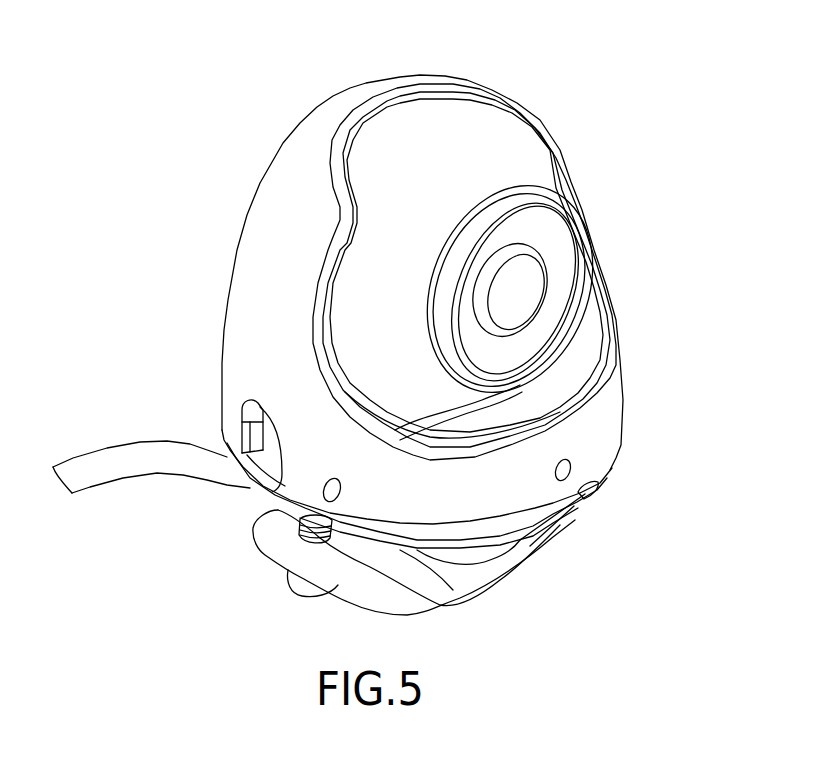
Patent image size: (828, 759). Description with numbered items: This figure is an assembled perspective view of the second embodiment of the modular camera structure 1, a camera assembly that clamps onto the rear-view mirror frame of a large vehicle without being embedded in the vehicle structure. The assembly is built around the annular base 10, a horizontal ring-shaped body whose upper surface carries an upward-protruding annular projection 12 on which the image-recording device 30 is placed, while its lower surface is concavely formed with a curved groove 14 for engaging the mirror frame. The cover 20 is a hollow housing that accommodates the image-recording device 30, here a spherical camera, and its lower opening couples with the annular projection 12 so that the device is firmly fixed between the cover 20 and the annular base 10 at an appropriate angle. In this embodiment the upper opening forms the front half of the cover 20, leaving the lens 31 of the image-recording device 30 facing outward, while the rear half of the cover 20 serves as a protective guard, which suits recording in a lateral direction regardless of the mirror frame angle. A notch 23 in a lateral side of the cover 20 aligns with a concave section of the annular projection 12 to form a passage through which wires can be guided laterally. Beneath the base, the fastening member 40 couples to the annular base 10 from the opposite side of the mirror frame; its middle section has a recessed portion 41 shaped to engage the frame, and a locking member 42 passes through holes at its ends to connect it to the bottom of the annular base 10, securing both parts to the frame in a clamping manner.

The modular camera structure 1 is at (160, 67).
The annular base 10 is at (612, 468).
The annular projection 12 is at (578, 358).
The curved groove 14 is at (587, 498).
The cover 20 is at (257, 267).
The notch 23 is at (268, 458).
The image-recording device 30 is at (455, 118).
The lens 31 is at (522, 272).
The fastening member 40 is at (440, 603).
The recessed portion 41 is at (477, 562).
The locking member 42 is at (307, 587).